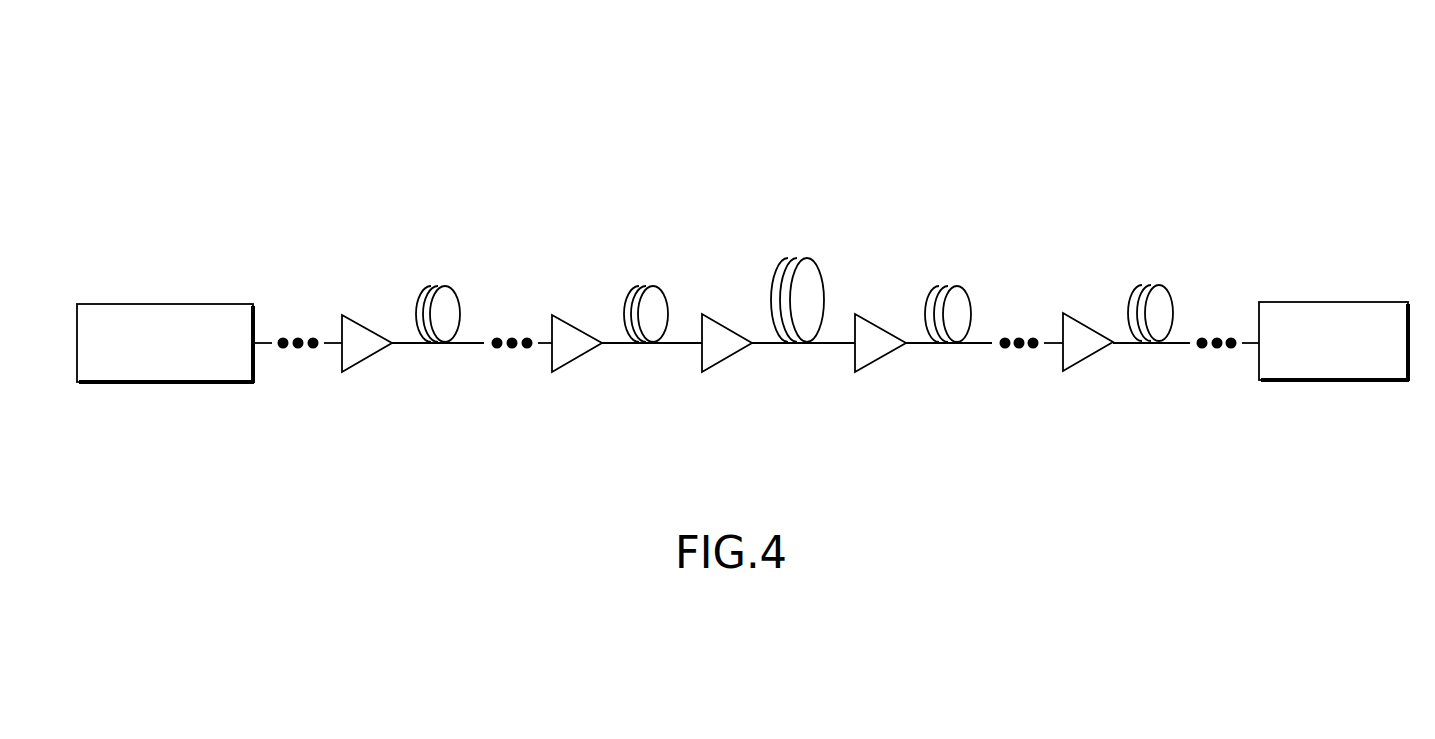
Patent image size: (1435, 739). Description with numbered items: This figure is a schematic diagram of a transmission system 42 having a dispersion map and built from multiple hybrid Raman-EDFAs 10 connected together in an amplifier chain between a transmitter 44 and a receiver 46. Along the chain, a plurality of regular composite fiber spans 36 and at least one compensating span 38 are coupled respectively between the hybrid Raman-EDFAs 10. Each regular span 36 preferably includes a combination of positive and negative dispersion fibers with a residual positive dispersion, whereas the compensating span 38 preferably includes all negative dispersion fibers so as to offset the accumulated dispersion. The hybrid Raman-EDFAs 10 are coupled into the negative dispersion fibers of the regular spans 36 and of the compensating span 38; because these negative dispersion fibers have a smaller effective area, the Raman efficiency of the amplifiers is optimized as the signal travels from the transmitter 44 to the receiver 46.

The hybrid Raman-EDFA 10 is at (362, 360).
The regular composite fiber span 36 is at (432, 287).
The compensating span 38 is at (790, 258).
The transmission system 42 is at (612, 166).
The transmitter 44 is at (178, 304).
The receiver 46 is at (1335, 302).